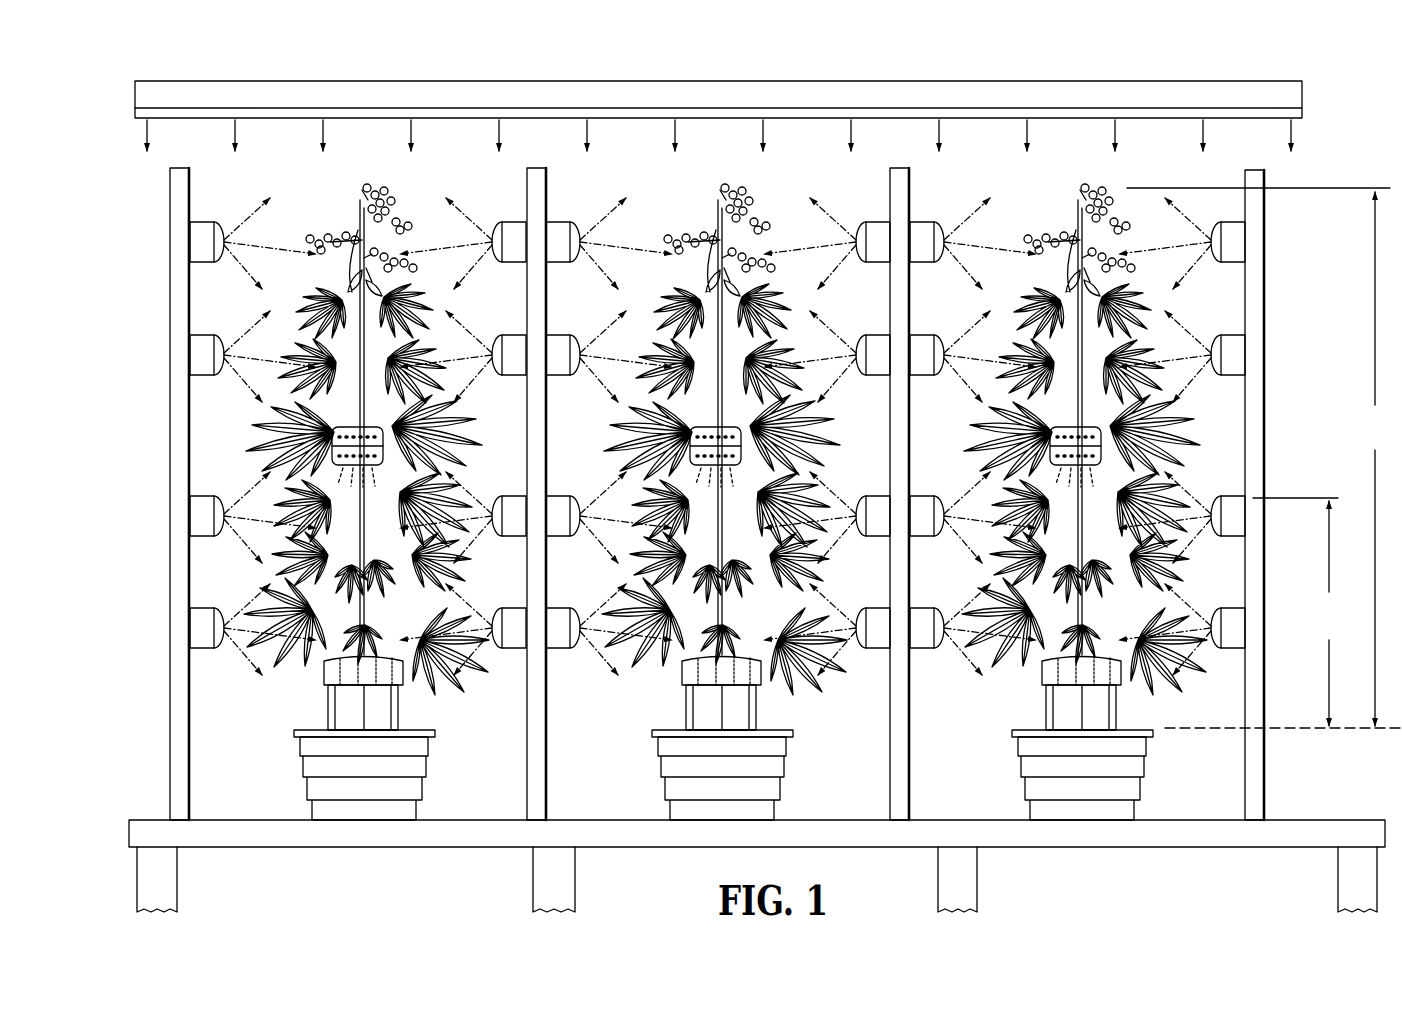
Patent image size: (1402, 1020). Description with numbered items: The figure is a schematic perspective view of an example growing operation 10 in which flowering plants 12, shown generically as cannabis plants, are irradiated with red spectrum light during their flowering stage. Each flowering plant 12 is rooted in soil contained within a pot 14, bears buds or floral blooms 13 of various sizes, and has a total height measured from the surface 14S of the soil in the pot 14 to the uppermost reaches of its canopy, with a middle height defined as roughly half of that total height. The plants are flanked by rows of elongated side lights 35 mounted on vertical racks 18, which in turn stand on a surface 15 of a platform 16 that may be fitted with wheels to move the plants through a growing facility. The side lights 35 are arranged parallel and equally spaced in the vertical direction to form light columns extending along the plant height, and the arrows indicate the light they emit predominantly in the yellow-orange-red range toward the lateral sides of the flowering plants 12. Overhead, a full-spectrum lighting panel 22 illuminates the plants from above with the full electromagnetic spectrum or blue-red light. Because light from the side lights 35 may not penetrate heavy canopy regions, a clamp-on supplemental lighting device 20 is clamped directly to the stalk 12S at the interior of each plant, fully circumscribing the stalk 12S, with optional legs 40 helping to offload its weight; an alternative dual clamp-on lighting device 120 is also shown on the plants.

The growing operation 10 is at (1282, 62).
The full-spectrum lighting panel 22 is at (887, 93).
The vertical rack 18 is at (170, 416).
The side light 35 is at (198, 243).
The surface 15 is at (147, 818).
The platform 16 is at (128, 835).
The flowering plant 12 is at (364, 195).
The buds or floral blooms 13 is at (357, 355).
The dual clamp-on lighting device 120 is at (440, 452).
The clamp-on supplemental lighting device 20 is at (398, 674).
The legs 40 is at (326, 714).
The stalk 12S is at (433, 738).
The surface of soil 14S is at (313, 736).
The pot 14 is at (422, 794).